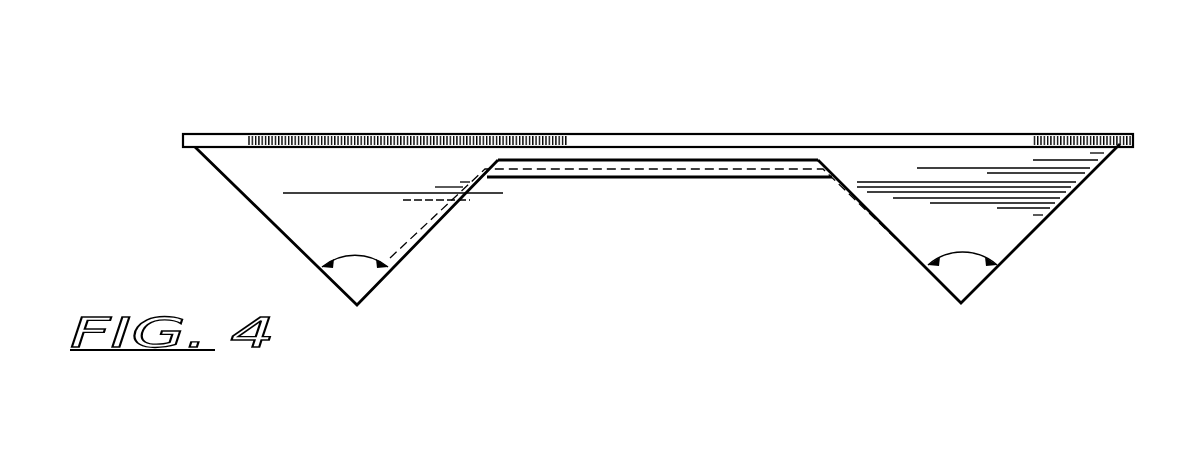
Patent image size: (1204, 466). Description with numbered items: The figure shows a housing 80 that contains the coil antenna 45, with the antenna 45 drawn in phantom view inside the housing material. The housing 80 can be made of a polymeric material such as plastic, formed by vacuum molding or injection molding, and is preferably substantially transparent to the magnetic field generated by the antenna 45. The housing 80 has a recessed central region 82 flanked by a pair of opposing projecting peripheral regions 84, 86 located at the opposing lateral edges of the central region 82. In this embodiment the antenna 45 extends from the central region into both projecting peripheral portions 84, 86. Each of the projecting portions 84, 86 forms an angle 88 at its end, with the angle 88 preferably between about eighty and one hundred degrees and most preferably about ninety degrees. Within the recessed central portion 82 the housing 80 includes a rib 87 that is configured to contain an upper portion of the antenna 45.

The housing 80 is at (1075, 82).
The recessed central region 82 is at (657, 268).
The projecting peripheral region 84 is at (369, 349).
The projecting peripheral region 86 is at (974, 340).
The rib 87 is at (710, 178).
The antenna 45 is at (618, 168).
The angle 88 is at (372, 255).